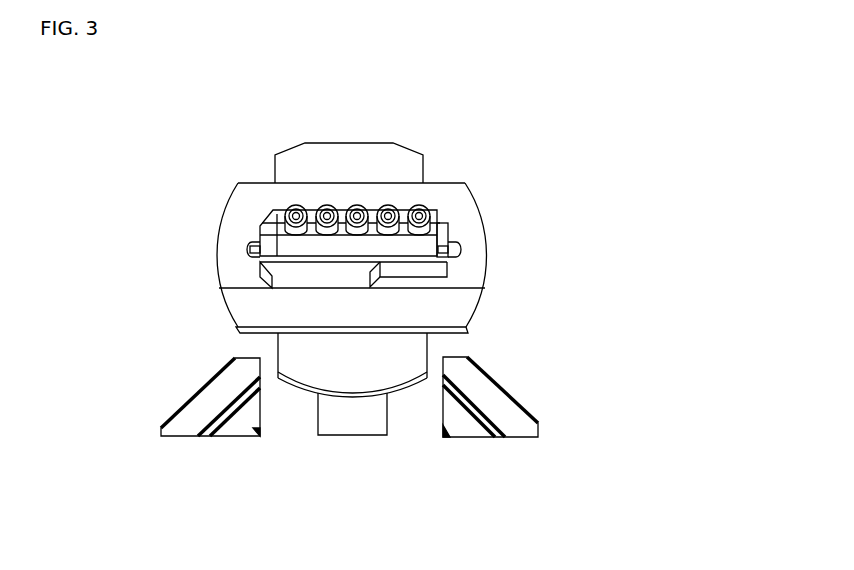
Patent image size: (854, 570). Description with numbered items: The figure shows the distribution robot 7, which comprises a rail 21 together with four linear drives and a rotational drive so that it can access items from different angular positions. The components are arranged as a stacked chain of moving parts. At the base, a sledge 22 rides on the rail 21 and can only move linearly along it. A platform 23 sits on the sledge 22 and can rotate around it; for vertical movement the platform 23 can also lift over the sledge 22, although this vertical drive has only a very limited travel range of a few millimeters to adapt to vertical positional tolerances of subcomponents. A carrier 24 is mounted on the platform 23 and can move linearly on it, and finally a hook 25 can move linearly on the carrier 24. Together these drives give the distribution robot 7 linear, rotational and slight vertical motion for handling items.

The distribution robot 7 is at (467, 163).
The rail 21 is at (355, 407).
The sledge 22 is at (397, 368).
The platform 23 is at (325, 311).
The carrier 24 is at (303, 270).
The hook 25 is at (253, 245).